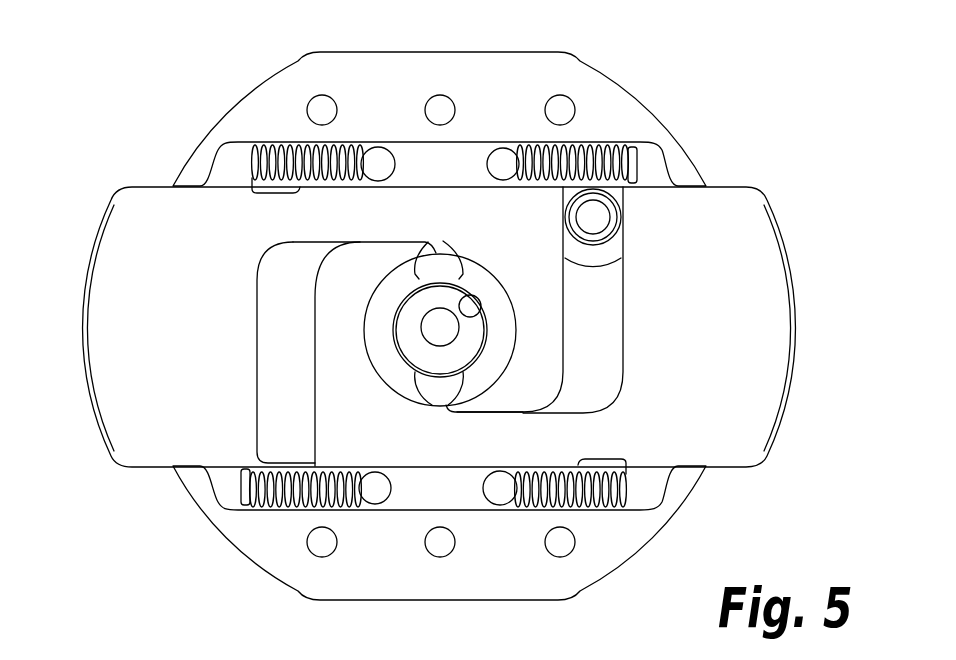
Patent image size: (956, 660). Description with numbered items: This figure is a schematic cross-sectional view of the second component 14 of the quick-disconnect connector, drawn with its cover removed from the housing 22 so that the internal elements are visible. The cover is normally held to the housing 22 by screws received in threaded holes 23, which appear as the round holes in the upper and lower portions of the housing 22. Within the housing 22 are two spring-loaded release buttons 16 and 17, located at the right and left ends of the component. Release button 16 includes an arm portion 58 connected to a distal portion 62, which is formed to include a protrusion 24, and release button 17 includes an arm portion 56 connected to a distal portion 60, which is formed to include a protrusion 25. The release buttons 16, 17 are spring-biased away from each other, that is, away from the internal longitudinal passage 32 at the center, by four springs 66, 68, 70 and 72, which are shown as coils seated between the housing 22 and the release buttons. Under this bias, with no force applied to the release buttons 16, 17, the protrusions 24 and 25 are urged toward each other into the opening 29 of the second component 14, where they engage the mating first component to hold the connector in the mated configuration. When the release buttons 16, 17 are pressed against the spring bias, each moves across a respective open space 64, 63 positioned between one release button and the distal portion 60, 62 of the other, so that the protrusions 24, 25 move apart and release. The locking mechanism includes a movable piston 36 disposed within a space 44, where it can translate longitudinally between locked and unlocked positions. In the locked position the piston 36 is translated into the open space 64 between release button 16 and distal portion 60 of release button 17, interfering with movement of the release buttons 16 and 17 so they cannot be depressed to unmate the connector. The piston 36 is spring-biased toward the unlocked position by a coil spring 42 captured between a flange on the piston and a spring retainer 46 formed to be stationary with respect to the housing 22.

The second component 14 is at (737, 117).
The release button 16 is at (757, 223).
The release button 17 is at (143, 245).
The housing 22 is at (578, 67).
The threaded holes 23 is at (329, 110).
The protrusion 24 is at (395, 372).
The protrusion 25 is at (490, 278).
The opening 29 is at (418, 338).
The internal longitudinal passage 32 is at (443, 331).
The piston 36 is at (594, 214).
The coil spring 42 is at (623, 247).
The space 44 is at (603, 258).
The spring retainer 46 is at (618, 222).
The arm portion 56 is at (353, 227).
The arm portion 58 is at (503, 454).
The distal portion 60 is at (523, 294).
The distal portion 62 is at (330, 306).
The open space 63 is at (278, 306).
The open space 64 is at (585, 339).
The spring 66 is at (278, 152).
The spring 68 is at (283, 503).
The spring 70 is at (590, 152).
The spring 72 is at (600, 506).